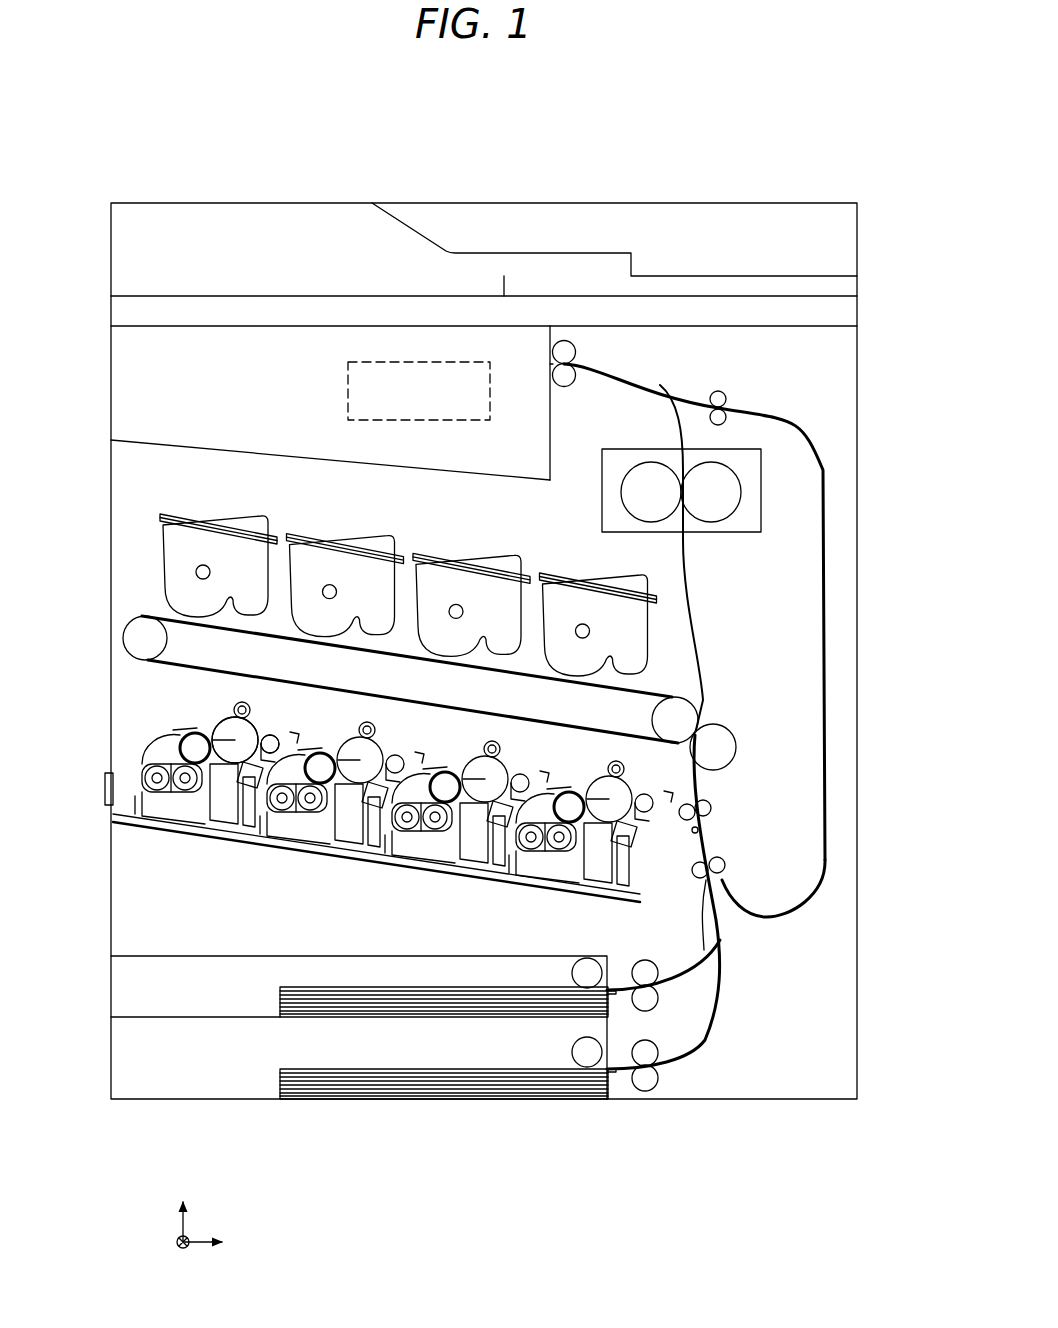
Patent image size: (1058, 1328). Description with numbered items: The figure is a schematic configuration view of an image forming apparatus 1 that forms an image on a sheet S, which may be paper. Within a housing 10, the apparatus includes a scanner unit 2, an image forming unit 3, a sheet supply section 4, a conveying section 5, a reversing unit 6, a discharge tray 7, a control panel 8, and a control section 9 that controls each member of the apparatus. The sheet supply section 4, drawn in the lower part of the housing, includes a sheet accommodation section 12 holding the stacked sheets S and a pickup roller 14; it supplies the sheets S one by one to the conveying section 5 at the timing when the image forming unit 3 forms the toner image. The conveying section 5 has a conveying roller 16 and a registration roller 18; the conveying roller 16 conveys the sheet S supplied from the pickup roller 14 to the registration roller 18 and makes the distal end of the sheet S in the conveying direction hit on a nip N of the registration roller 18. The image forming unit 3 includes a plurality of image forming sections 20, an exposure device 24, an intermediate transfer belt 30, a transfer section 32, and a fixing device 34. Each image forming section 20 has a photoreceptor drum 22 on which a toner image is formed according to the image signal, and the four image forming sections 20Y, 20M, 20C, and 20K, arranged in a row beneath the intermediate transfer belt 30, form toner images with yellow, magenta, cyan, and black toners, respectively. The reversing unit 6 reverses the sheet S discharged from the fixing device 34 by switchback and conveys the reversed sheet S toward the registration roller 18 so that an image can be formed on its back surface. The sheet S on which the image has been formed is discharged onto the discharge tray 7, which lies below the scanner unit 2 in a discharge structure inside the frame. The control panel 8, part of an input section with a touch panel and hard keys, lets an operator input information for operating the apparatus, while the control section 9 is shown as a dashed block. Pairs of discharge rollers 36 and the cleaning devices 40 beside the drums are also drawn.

The image forming apparatus 1 is at (791, 162).
The scanner unit 2 is at (138, 311).
The image forming unit 3 is at (144, 551).
The sheet supply section 4 is at (106, 1018).
The conveying section 5 is at (793, 809).
The reversing unit 6 is at (832, 406).
The discharge tray 7 is at (144, 446).
The control panel 8 is at (818, 266).
The control section 9 is at (448, 362).
The housing 10 is at (857, 348).
The sheet accommodation section 12 is at (111, 1064).
The pickup roller 14 is at (589, 1055).
The conveying roller 16 is at (732, 855).
The registration roller 18 is at (722, 798).
The image forming section 20 is at (349, 788).
The image forming section 20Y is at (239, 736).
The image forming section 20M is at (338, 740).
The image forming section 20C is at (468, 755).
The image forming section 20K is at (589, 774).
The photoreceptor drum 22 is at (248, 733).
The exposure device 24 is at (224, 815).
The intermediate transfer belt 30 is at (172, 684).
The transfer section 32 is at (716, 702).
The fixing device 34 is at (762, 484).
The discharge rollers 36 is at (588, 345).
The cleaning device 40 is at (308, 724).
The nip N is at (692, 829).
The sheet S is at (382, 1060).